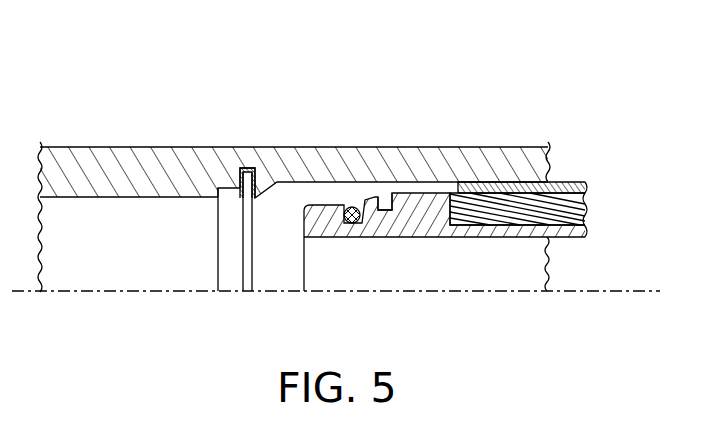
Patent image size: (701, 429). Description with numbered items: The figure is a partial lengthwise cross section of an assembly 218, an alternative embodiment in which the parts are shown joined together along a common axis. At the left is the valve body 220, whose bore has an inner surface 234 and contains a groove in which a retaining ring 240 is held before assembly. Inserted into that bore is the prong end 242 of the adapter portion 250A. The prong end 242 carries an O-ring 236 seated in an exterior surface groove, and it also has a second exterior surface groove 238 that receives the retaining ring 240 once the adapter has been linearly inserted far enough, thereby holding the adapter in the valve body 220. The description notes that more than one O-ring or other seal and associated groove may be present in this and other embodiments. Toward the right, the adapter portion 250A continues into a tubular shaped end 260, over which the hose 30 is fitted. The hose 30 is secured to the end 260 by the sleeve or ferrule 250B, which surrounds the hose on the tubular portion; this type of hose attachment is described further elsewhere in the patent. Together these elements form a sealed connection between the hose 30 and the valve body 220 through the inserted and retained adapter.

The assembly 218 is at (312, 68).
The valve body 220 is at (118, 143).
The inner surface of housing 234 is at (137, 198).
The retaining ring 240 is at (255, 192).
The O-ring 236 is at (353, 207).
The second exterior surface groove 238 is at (389, 200).
The prong end 242 is at (304, 255).
The adapter portion 250A is at (457, 240).
The sleeve/ferrule 250B is at (568, 182).
The cable 30 is at (585, 210).
The end of adapter portion 260 is at (573, 240).